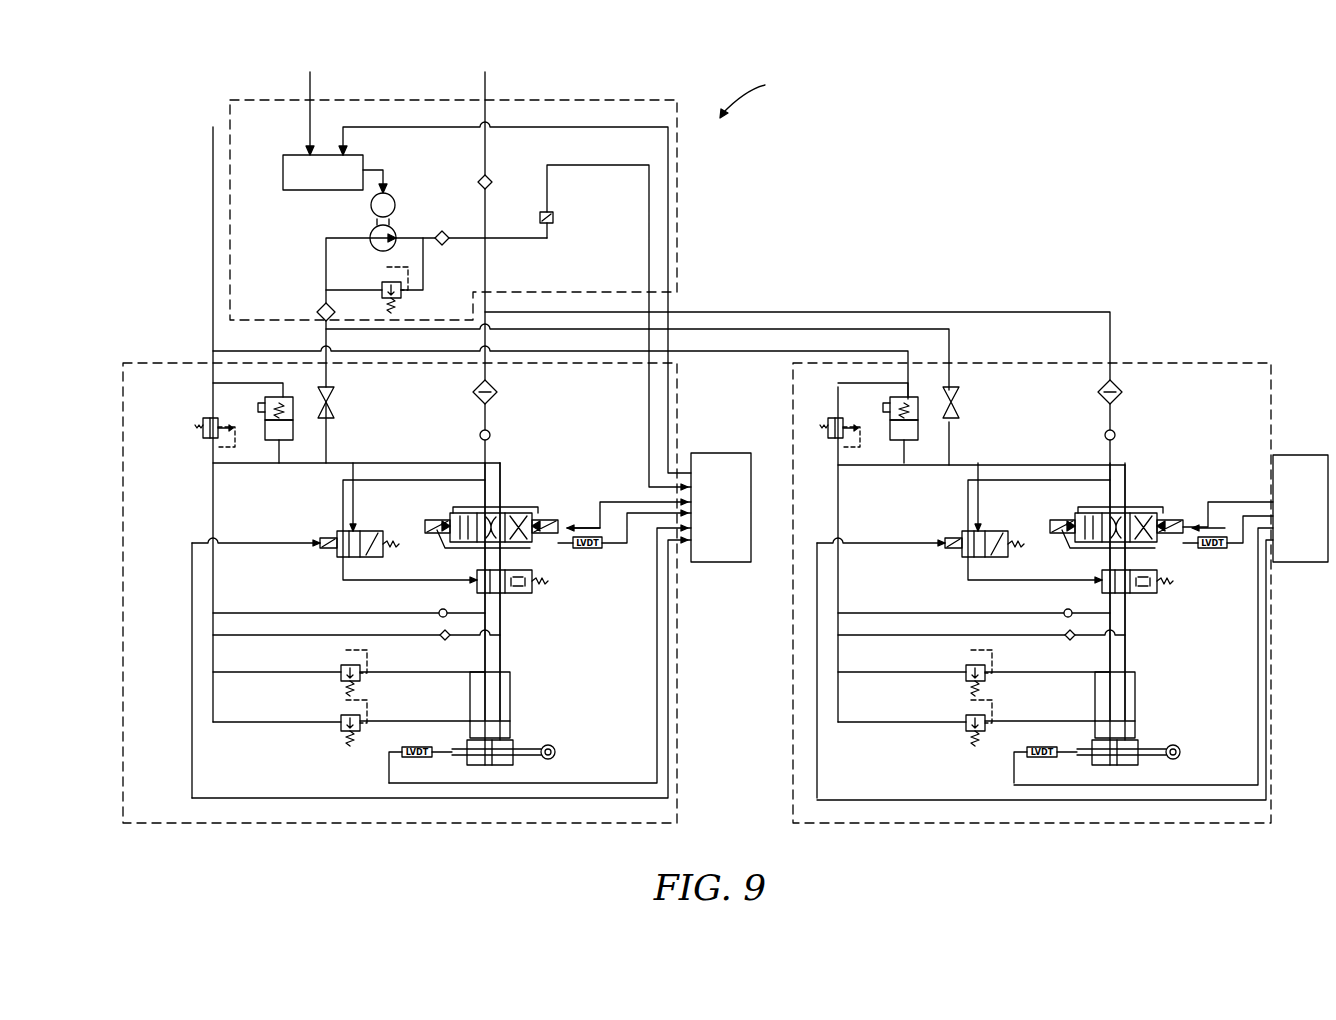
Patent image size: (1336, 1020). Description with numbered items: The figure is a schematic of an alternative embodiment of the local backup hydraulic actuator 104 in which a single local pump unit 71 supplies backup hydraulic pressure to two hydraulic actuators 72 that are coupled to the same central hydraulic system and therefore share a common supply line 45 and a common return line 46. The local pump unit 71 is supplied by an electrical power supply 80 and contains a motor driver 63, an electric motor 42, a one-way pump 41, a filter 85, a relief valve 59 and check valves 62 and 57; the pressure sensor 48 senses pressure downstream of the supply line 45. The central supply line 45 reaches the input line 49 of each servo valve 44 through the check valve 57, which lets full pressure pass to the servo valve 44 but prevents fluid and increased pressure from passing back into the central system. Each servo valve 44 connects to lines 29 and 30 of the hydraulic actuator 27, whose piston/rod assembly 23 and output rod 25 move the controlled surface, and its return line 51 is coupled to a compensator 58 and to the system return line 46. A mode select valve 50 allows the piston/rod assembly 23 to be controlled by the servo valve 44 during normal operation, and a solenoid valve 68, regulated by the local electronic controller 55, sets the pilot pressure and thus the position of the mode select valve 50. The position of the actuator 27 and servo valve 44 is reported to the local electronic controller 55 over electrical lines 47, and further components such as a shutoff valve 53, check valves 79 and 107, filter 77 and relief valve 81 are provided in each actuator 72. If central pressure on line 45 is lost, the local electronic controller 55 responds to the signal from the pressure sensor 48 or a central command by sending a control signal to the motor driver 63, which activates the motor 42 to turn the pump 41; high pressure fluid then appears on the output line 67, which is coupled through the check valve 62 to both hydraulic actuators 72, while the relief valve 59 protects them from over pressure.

The piston/rod assembly 23 is at (456, 746).
The actuator output rod 25 is at (515, 758).
The hydraulic actuator 27 is at (488, 776).
The line 29 is at (468, 695).
The line 30 is at (512, 720).
The one-way pump 41 is at (372, 232).
The electric motor 42 is at (396, 203).
The servo valve 44 is at (525, 510).
The supply line 45 is at (485, 78).
The return line 46 is at (213, 152).
The electrical lines 47 is at (595, 550).
The pressure sensor 48 is at (552, 212).
The input line 49 is at (482, 496).
The mode select valve 50 is at (550, 594).
The return line 51 is at (408, 462).
The shutoff valve 53 is at (334, 410).
The local electronic controller 55 is at (720, 453).
The check valve 57 is at (489, 178).
The compensator 58 is at (294, 405).
The relief valve 59 is at (404, 292).
The check valve 62 is at (445, 245).
The motor driver 63 is at (290, 152).
The output line 67 is at (402, 236).
The solenoid valve 68 is at (370, 530).
The local pump unit 71 is at (252, 96).
The hydraulic actuator 72 is at (120, 405).
The filter 77 is at (498, 392).
The check valve 79 is at (440, 610).
The electrical power supply 80 is at (312, 82).
The relief valve 81 is at (213, 415).
The filter 85 is at (320, 306).
The local backup hydraulic actuator 104 is at (762, 96).
The check valve 107 is at (491, 435).